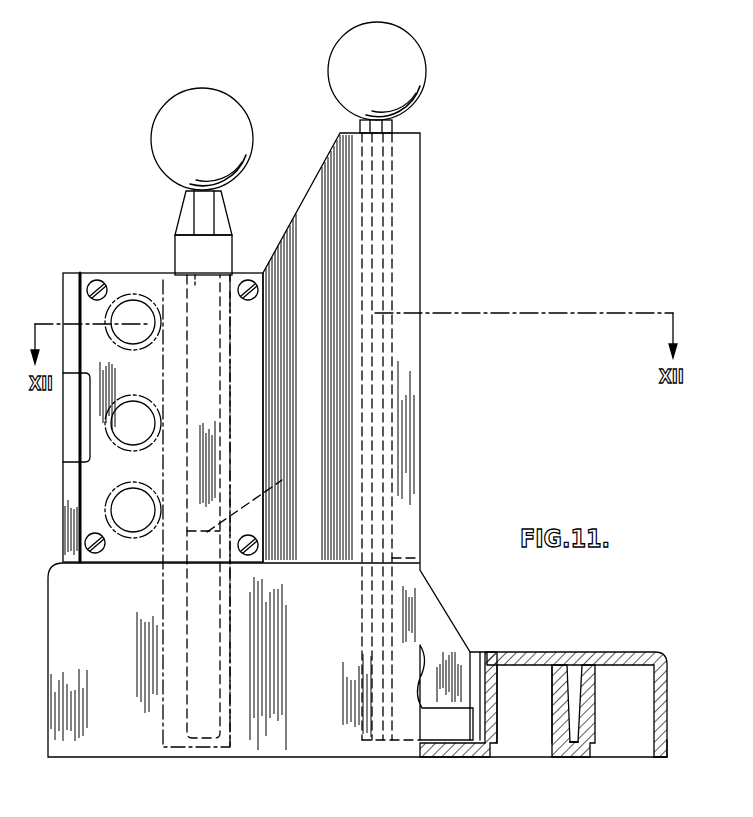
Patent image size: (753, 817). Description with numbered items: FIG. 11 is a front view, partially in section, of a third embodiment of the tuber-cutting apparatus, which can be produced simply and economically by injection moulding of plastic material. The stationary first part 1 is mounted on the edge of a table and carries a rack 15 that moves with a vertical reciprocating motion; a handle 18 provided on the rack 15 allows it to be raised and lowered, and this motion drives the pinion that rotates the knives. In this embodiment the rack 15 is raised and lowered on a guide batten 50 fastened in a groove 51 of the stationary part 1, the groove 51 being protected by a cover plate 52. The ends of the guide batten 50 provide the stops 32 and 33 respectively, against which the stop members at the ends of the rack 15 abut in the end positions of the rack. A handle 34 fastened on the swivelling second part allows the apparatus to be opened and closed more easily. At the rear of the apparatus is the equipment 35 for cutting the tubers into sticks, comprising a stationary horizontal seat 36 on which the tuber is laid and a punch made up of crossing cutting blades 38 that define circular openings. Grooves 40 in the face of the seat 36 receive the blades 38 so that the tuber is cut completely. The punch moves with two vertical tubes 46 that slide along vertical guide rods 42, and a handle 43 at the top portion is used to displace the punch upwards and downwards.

The first part 1 is at (67, 630).
The rack 15 is at (218, 255).
The handle 18 is at (230, 120).
The stop 32 is at (270, 483).
The stop 33 is at (205, 276).
The handle 34 is at (68, 421).
The equipment 35 is at (675, 756).
The seat 36 is at (633, 652).
The cutting blades 38 is at (578, 652).
The grooves 40 is at (572, 733).
The guide rods 42 is at (398, 270).
The handle 43 is at (400, 68).
The vertical tubes 46 is at (392, 128).
The guide batten 50 is at (215, 407).
The groove 51 is at (225, 702).
The cover plate 52 is at (248, 358).